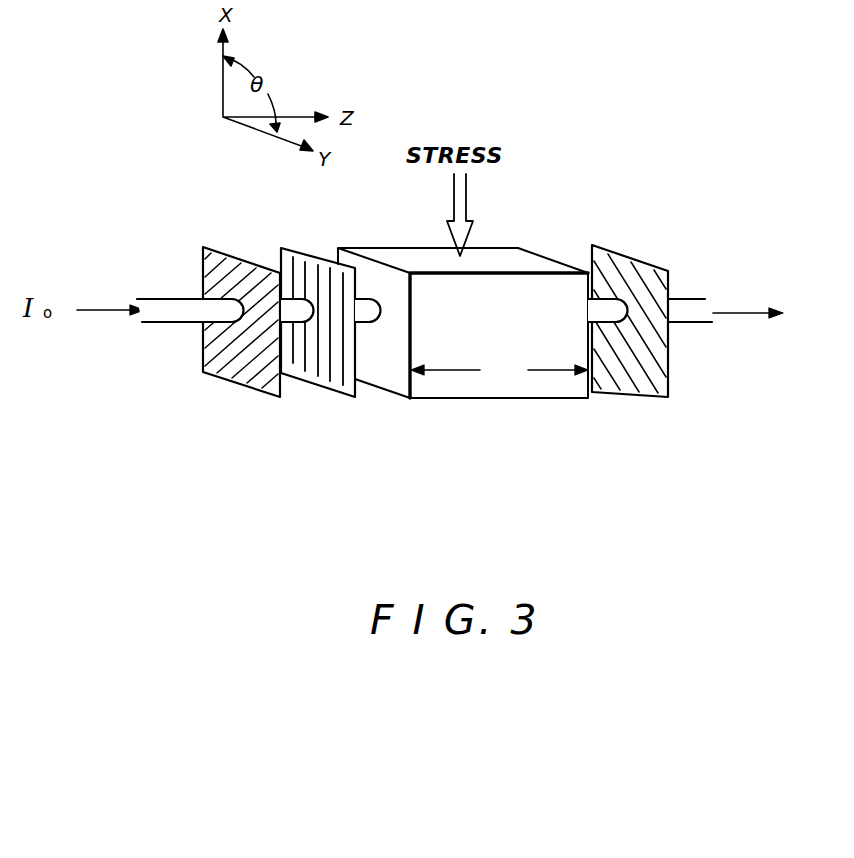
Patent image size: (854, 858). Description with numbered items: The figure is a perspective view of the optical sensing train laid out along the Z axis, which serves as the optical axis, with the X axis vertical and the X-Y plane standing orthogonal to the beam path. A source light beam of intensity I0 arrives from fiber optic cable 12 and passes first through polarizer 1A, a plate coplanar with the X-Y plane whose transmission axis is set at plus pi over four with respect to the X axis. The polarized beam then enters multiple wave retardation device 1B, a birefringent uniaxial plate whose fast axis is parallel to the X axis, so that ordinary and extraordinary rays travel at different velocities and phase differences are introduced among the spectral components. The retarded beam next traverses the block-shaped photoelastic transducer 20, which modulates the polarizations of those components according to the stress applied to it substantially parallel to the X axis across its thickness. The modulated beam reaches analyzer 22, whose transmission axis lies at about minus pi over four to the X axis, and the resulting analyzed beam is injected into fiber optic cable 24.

The fiber optic cable 12 is at (178, 270).
The polarizer 1A is at (233, 257).
The multiple wave retardation device 1B is at (288, 238).
The photoelastic transducer 20 is at (489, 398).
The analyzer 22 is at (648, 272).
The fiber optic cable 24 is at (696, 302).